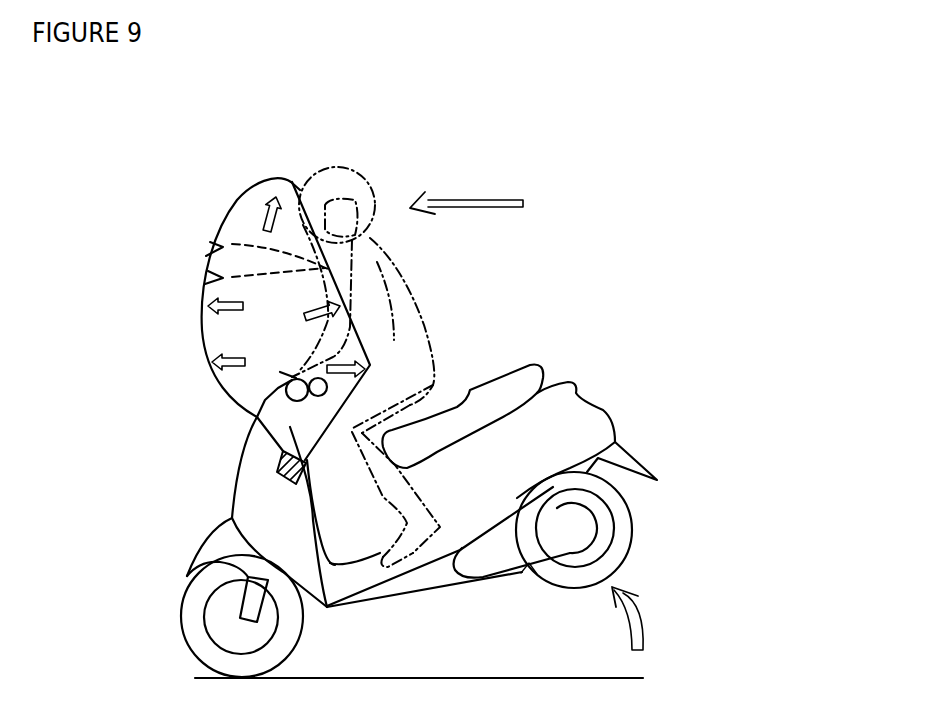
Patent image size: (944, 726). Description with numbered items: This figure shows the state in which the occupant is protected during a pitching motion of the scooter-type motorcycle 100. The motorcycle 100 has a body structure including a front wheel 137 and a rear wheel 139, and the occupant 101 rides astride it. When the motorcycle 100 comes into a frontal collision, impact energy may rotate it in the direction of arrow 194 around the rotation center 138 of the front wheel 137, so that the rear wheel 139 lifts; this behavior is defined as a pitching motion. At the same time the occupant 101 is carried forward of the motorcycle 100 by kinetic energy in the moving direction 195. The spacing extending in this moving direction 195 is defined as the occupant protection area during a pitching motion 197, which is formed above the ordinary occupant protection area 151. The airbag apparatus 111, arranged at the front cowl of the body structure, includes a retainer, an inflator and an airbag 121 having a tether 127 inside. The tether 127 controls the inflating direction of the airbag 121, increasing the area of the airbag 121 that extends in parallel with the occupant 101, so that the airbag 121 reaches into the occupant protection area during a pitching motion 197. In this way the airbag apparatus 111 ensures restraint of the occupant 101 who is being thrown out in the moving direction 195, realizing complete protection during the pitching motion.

The motorcycle 100 is at (615, 408).
The occupant 101 is at (413, 335).
The airbag apparatus 111 is at (268, 458).
The airbag 121 is at (223, 378).
The tether 127 is at (215, 276).
The front wheel 137 is at (188, 620).
The rotation center 138 is at (242, 617).
The rear wheel 139 is at (620, 538).
The occupant protection area 151 is at (285, 322).
The direction of a pitching motion 194 is at (658, 618).
The moving direction of the occupant during a pitching motion 195 is at (489, 206).
The occupant protection area during a pitching motion 197 is at (295, 172).